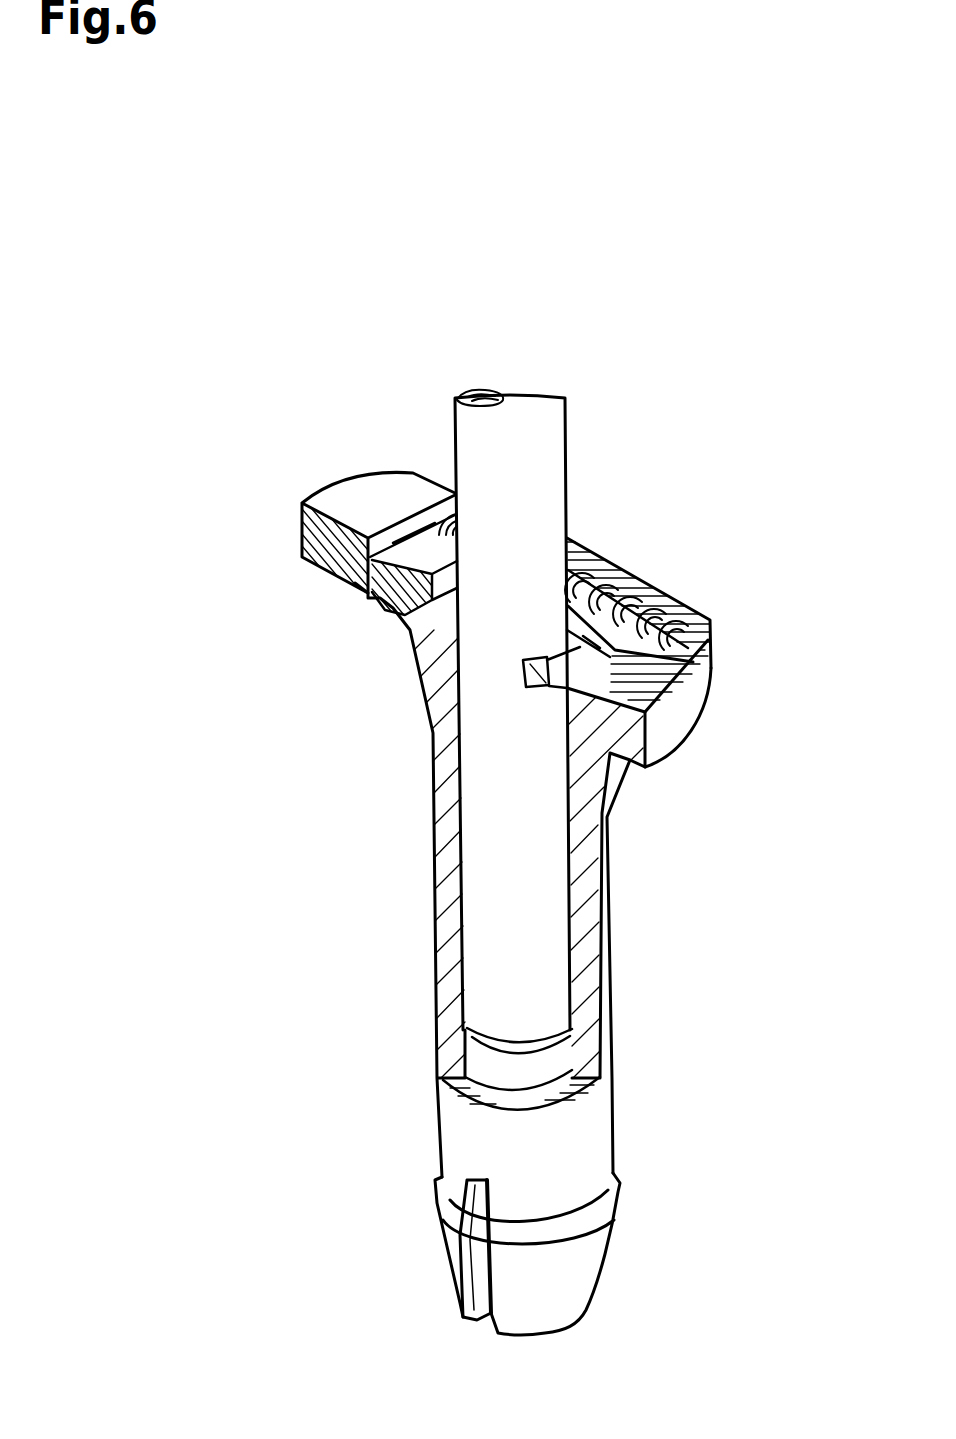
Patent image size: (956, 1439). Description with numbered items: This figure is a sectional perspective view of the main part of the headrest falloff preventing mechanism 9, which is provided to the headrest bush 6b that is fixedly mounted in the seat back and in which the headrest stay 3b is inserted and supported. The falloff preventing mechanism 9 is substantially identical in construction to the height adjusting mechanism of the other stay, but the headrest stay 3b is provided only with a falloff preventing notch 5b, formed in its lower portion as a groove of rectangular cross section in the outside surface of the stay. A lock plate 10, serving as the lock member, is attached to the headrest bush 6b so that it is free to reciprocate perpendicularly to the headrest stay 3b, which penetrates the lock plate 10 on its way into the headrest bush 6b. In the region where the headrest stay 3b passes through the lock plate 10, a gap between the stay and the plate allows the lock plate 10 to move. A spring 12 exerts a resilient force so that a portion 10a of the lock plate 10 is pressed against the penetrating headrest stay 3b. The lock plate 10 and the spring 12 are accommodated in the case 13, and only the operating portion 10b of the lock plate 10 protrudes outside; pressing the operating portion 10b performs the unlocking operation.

The headrest stay 3b is at (530, 478).
The operating portion 10b is at (347, 510).
The lock plate 10 is at (422, 562).
The falloff preventing notch 5b is at (530, 688).
The headrest bush 6b is at (450, 850).
The headrest falloff preventing mechanism 9 is at (709, 602).
The spring 12 is at (570, 583).
The portion 10a is at (600, 632).
The case 13 is at (684, 717).